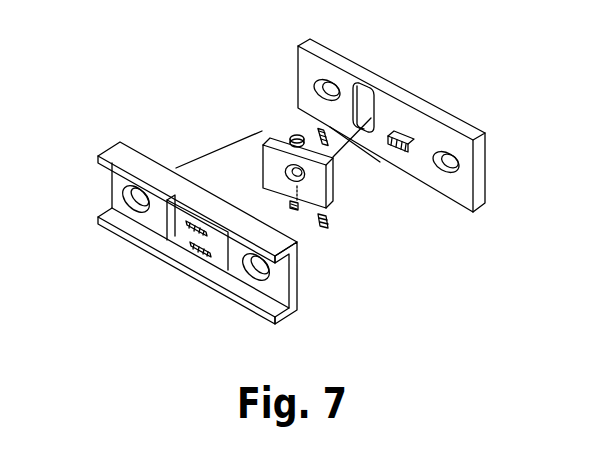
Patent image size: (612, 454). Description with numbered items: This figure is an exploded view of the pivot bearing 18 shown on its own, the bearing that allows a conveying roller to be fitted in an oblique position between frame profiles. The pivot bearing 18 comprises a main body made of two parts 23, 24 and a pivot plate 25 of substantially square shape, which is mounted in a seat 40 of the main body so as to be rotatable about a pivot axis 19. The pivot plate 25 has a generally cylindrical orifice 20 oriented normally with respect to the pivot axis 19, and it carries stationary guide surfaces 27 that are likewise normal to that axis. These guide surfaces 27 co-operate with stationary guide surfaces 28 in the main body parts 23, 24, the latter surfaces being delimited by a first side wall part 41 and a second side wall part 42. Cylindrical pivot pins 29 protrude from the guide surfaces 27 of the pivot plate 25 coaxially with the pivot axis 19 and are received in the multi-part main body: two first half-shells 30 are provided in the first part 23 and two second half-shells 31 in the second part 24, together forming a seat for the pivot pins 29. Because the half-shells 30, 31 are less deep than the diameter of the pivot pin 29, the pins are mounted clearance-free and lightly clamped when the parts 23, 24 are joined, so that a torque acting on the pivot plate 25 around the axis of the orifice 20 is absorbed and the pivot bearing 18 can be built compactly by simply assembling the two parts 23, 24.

The pivot bearing 18 is at (145, 97).
The pivot axis 19 is at (298, 141).
The orifice 20 is at (284, 173).
The first part 23 is at (481, 192).
The second part 24 is at (117, 153).
The pivot plate 25 is at (318, 185).
The guide surfaces 27 is at (326, 130).
The guide surfaces 28 is at (218, 258).
The pivot pins 29 is at (292, 144).
The first half-shells 30 is at (405, 140).
The second half-shells 31 is at (205, 243).
The seat 40 is at (200, 229).
The first side wall part 41 is at (377, 86).
The second side wall part 42 is at (478, 151).